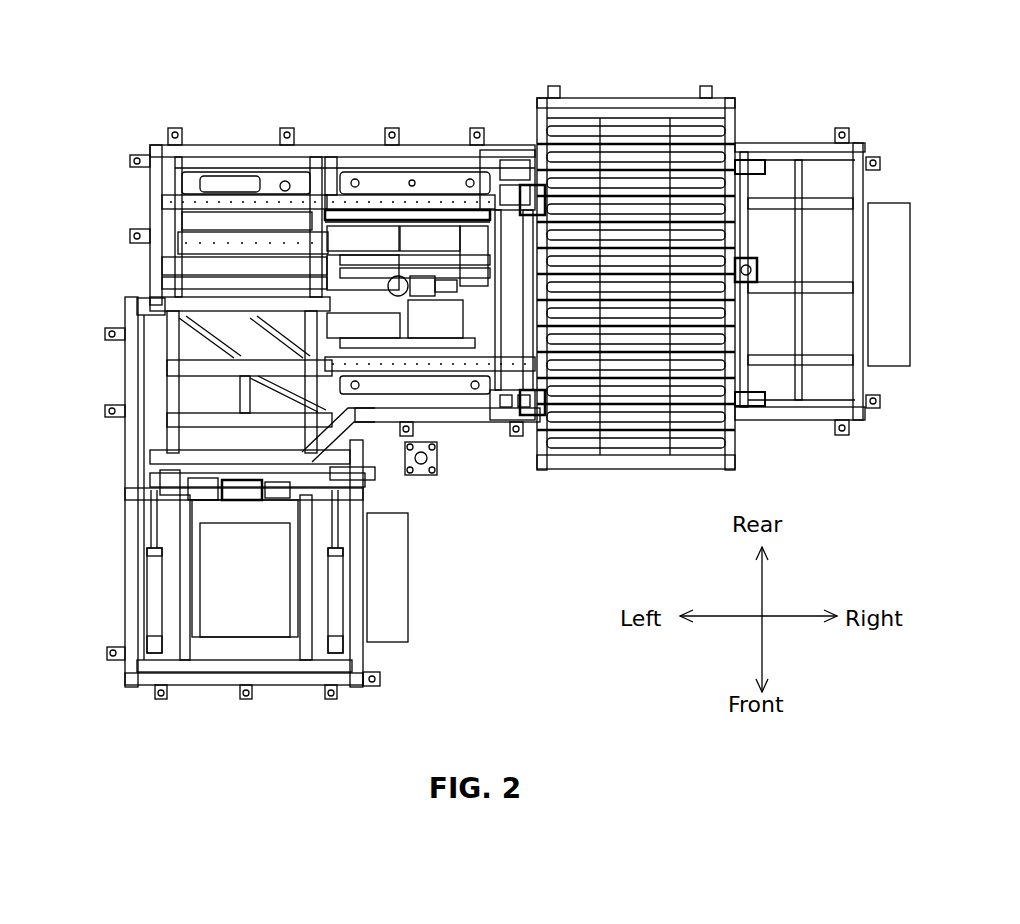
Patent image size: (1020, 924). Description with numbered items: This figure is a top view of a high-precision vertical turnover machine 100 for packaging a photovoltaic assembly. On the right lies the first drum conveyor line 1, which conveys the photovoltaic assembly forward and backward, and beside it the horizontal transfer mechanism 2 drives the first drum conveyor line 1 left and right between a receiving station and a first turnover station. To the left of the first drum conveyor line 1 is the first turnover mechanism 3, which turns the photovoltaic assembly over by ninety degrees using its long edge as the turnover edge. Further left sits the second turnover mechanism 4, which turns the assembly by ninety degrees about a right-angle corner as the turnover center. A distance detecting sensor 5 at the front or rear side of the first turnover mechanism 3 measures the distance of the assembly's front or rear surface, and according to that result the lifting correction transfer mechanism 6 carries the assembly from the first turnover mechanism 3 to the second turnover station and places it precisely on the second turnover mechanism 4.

The material handling apparatus 100 is at (138, 97).
The first drum conveyor line 1 is at (613, 100).
The horizontal transfer mechanism 2 is at (773, 208).
The first turnover mechanism 3 is at (415, 190).
The second turnover mechanism 4 is at (170, 430).
The distance detecting sensor 5 is at (430, 470).
The lifting correction transfer mechanism 6 is at (385, 240).